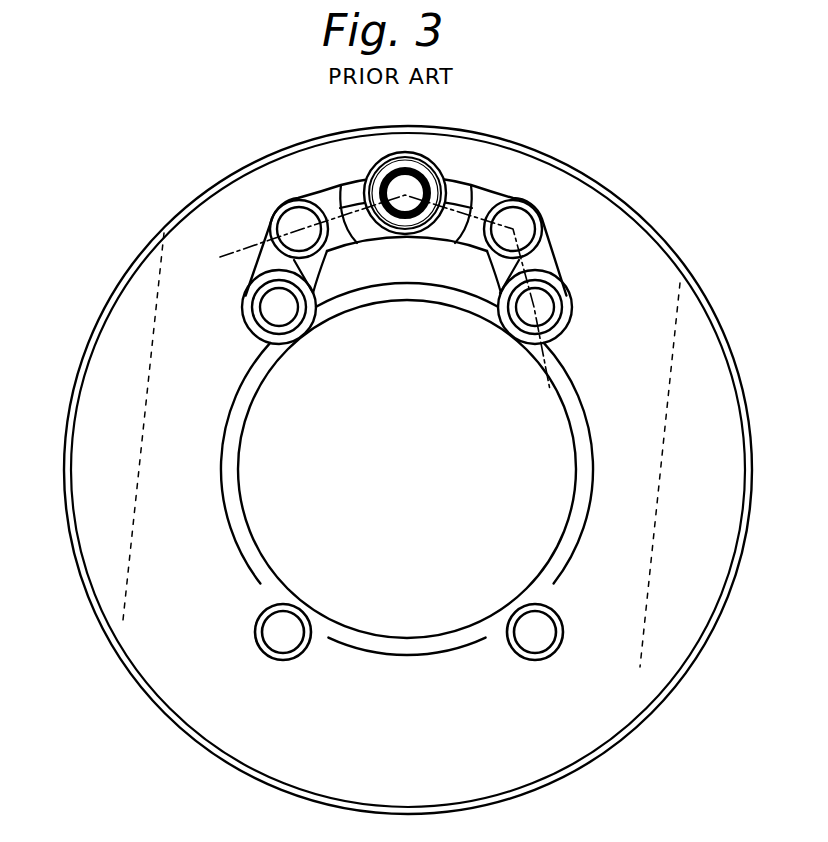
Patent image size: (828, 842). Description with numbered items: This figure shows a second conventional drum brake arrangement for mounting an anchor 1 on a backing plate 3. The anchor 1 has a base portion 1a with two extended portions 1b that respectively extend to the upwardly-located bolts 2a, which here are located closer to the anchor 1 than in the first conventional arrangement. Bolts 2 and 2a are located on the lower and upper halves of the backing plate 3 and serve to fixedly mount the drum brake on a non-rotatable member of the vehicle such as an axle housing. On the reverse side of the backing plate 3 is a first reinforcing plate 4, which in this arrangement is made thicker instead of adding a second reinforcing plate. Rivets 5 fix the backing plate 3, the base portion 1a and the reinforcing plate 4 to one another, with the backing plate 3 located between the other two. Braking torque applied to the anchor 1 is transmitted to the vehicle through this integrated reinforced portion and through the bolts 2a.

The anchor 1 is at (387, 382).
The base portion 1a is at (320, 193).
The extended portions 1b is at (264, 262).
The bolts 2 is at (272, 635).
The bolts 2a is at (270, 313).
The backing plate 3 is at (704, 586).
The first reinforcing plate 4 is at (209, 215).
The rivets 5 is at (290, 218).